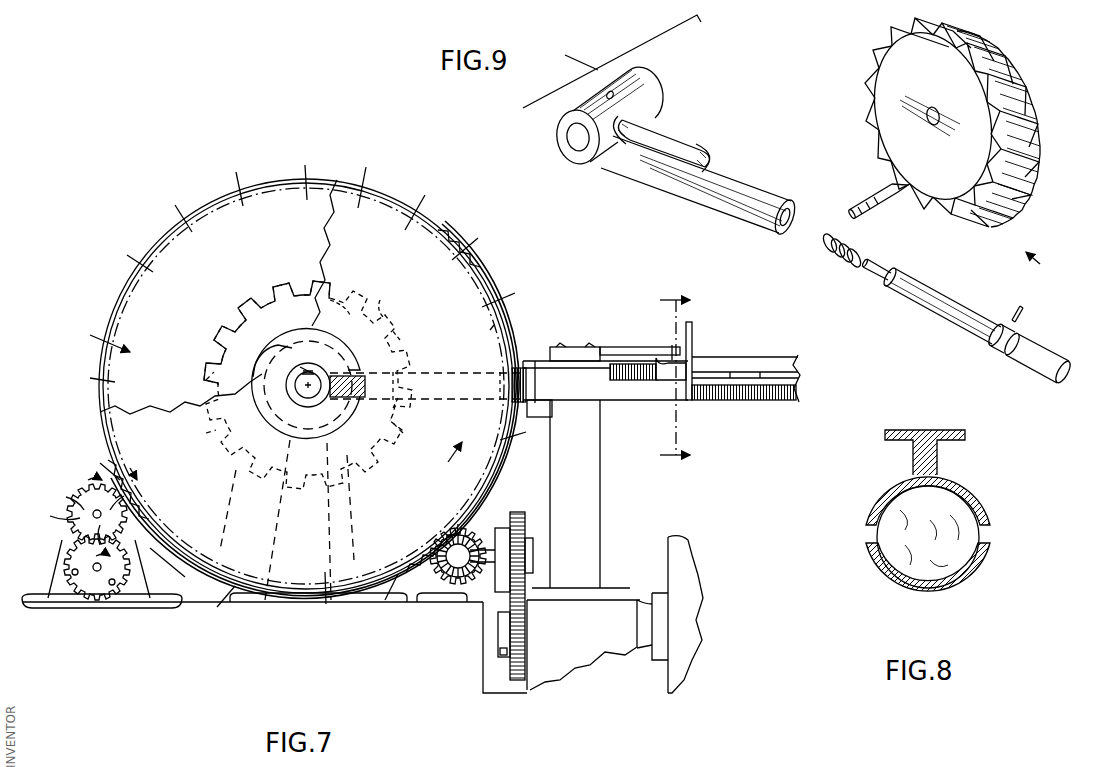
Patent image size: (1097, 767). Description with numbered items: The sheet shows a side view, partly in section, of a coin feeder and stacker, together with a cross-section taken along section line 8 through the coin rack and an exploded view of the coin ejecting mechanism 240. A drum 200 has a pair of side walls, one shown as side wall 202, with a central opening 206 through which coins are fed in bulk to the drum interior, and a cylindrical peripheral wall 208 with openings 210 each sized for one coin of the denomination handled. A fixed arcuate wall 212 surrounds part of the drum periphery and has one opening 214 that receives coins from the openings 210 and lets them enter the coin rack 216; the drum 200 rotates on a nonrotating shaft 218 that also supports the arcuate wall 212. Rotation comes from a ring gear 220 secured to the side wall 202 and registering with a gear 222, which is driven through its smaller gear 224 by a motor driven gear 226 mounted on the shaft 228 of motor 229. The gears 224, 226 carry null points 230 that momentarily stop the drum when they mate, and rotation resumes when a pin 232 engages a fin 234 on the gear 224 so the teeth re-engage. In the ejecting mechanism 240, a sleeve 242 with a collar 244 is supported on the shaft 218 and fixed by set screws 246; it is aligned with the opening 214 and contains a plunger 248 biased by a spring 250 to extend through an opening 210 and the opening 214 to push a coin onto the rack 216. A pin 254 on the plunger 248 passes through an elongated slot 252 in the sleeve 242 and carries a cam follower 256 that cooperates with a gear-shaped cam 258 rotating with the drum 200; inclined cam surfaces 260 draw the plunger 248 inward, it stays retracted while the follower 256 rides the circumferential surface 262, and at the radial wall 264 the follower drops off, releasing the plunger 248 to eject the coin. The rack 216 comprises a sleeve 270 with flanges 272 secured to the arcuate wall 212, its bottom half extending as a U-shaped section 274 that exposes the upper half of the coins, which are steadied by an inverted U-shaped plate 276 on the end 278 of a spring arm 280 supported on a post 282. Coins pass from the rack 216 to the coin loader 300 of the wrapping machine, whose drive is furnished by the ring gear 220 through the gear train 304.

In FIG. 7, the drum 200 is at (87, 336).
In FIG. 7, the side wall 202 is at (143, 308).
In FIG. 7, the central opening 206 is at (292, 325).
In FIG. 7, the cylindrical peripheral wall 208 is at (212, 210).
In FIG. 7, the openings 210 is at (244, 259).
In FIG. 7, the arcuate wall 212 is at (508, 440).
In FIG. 7, the opening 214 is at (528, 360).
In FIG. 7, the coin rack 216 is at (598, 394).
In FIG. 7, the nonrotating shaft 218 is at (320, 373).
In FIG. 7, the ring gear 220 is at (452, 260).
In FIG. 7, the gear 222 is at (80, 478).
In FIG. 7, the smaller gear 224 is at (52, 516).
In FIG. 7, the motor driven gear 226 is at (98, 588).
In FIG. 7, the shaft 228 is at (93, 580).
In FIG. 7, the motor 229 is at (52, 570).
In FIG. 7, the null points 230 is at (72, 500).
In FIG. 7, the pin 232 is at (122, 590).
In FIG. 7, the fin 234 is at (108, 470).
In FIG. 9, the ejecting mechanism 240 is at (1048, 267).
In FIG. 7, the sleeve 242 is at (513, 420).
In FIG. 9, the sleeve 242 is at (760, 188).
In FIG. 7, the collar 244 is at (305, 400).
In FIG. 9, the collar 244 is at (645, 102).
In FIG. 7, the set screws 246 is at (292, 357).
In FIG. 7, the plunger 248 is at (465, 372).
In FIG. 9, the plunger 248 is at (965, 310).
In FIG. 7, the spring 250 is at (345, 405).
In FIG. 9, the spring 250 is at (838, 265).
In FIG. 9, the elongated slot 252 is at (688, 146).
In FIG. 9, the pin 254 is at (872, 212).
In FIG. 9, the cam follower 256 is at (893, 196).
In FIG. 7, the gear-shaped cam 258 is at (348, 475).
In FIG. 9, the gear-shaped cam 258 is at (1020, 195).
In FIG. 7, the inclined cam surfaces 260 is at (216, 338).
In FIG. 9, the inclined cam surfaces 260 is at (1015, 122).
In FIG. 7, the circumferential surface 262 is at (248, 466).
In FIG. 9, the circumferential surface 262 is at (965, 100).
In FIG. 7, the radial wall 264 is at (378, 341).
In FIG. 7, the sleeve 270 is at (586, 392).
In FIG. 7, the flanges 272 is at (500, 330).
In FIG. 7, the U-shaped section 274 is at (665, 398).
In FIG. 8, the U-shaped section 274 is at (868, 572).
In FIG. 7, the inverted U-shaped plate 276 is at (685, 362).
In FIG. 8, the inverted U-shaped plate 276 is at (870, 510).
In FIG. 7, the end 278 is at (672, 345).
In FIG. 8, the end 278 is at (888, 432).
In FIG. 7, the spring arm 280 is at (616, 348).
In FIG. 8, the spring arm 280 is at (918, 430).
In FIG. 7, the post 282 is at (576, 352).
In FIG. 7, the coin loader 300 is at (790, 345).
In FIG. 7, the gear train 304 is at (455, 606).
In FIG. 7, the section line 8— 8 is at (665, 378).